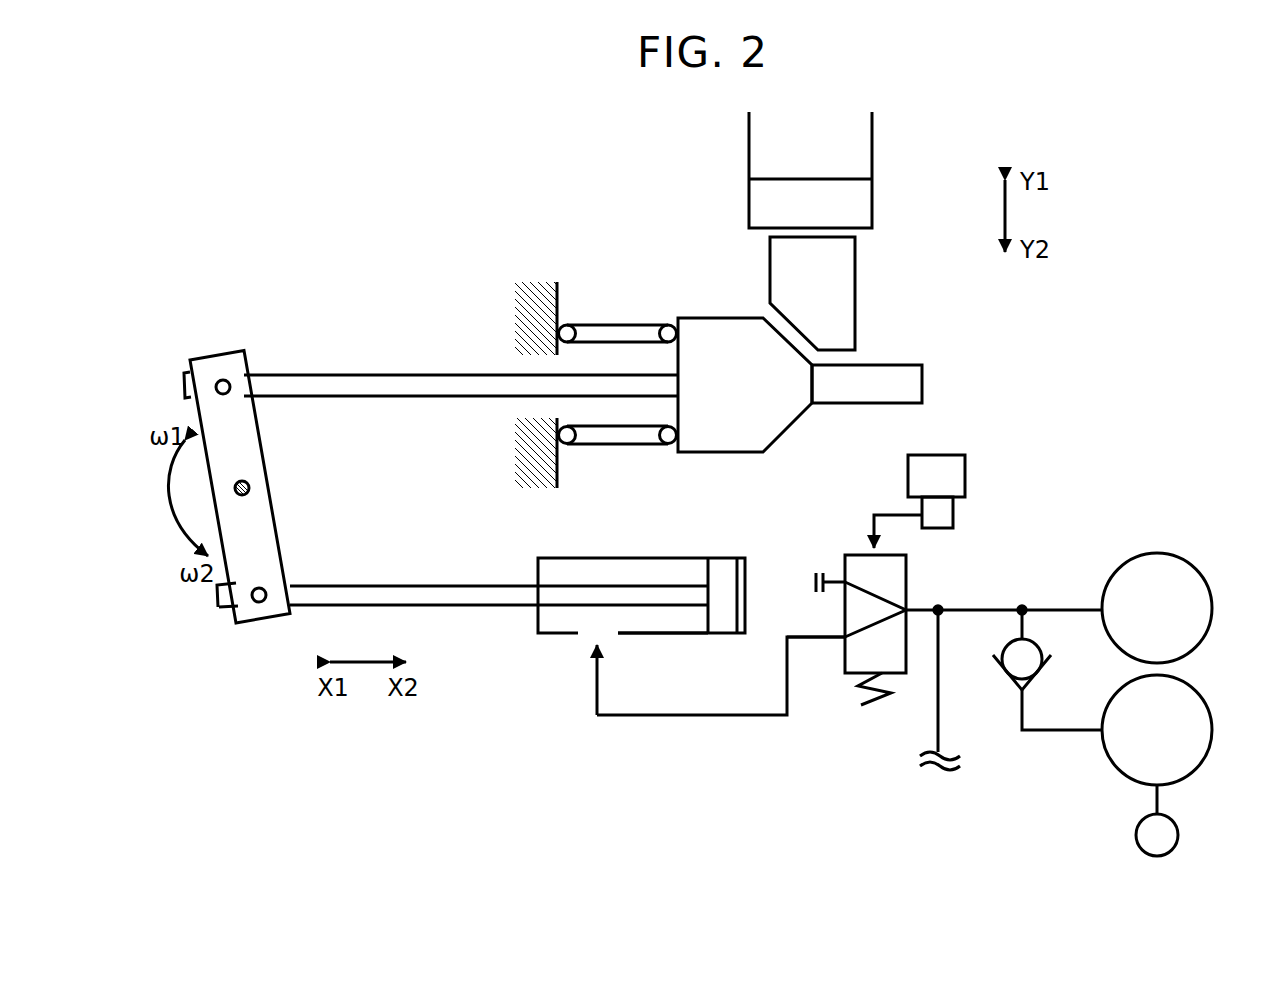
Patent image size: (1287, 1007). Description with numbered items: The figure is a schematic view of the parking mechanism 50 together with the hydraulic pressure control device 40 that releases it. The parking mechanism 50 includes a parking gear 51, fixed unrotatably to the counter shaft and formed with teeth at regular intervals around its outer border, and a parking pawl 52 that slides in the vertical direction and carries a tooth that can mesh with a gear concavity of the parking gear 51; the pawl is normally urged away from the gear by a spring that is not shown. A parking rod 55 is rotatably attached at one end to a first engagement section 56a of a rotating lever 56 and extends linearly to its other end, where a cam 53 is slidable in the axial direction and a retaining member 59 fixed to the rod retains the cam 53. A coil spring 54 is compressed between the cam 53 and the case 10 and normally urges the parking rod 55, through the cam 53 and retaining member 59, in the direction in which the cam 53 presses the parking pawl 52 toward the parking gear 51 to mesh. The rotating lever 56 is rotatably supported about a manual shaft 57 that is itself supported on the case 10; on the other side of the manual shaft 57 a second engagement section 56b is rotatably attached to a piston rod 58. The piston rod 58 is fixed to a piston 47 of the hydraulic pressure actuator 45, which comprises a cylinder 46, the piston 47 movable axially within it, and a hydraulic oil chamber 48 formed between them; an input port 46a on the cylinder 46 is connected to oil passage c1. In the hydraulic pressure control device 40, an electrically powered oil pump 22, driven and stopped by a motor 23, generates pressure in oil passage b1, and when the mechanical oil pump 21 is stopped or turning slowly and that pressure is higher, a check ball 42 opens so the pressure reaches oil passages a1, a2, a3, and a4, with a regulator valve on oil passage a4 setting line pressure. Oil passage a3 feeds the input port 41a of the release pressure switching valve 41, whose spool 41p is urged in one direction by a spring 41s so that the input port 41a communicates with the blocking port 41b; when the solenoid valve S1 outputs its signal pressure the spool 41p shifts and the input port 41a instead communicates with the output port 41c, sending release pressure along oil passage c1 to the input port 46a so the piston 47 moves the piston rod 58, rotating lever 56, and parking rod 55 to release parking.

The case 10 is at (560, 283).
The mechanical oil pump 21 is at (1200, 566).
The electrically powered oil pump 22 is at (1200, 688).
The motor 23 is at (1178, 826).
The hydraulic pressure control device 40 is at (1046, 451).
The release pressure switching valve 41 is at (877, 633).
The input port 41a is at (908, 603).
The blocking port 41b is at (843, 568).
The output port 41c is at (843, 633).
The spool 41p is at (856, 560).
The spring 41s is at (883, 701).
The check ball 42 is at (1046, 681).
The hydraulic pressure actuator 45 is at (651, 600).
The cylinder 46 is at (600, 557).
The input port 46a is at (617, 635).
The piston 47 is at (723, 562).
The hydraulic oil chamber 48 is at (673, 626).
The parking mechanism 50 is at (586, 194).
The parking gear 51 is at (874, 132).
The parking pawl 52 is at (857, 260).
The cam 53 is at (727, 326).
The coil spring 54 is at (620, 323).
The parking rod 55 is at (403, 397).
The rotating lever 56 is at (252, 425).
The first engagement section 56a is at (232, 379).
The second engagement section 56b is at (266, 589).
The manual shaft 57 is at (250, 486).
The piston rod 58 is at (410, 588).
The retaining member 59 is at (902, 363).
The solenoid valve S1 is at (946, 455).
The oil passage a1 is at (1063, 604).
The oil passage a2 is at (982, 604).
The oil passage a3 is at (918, 614).
The oil passage a4 is at (941, 698).
The oil passage b1 is at (1066, 733).
The oil passage c1 is at (790, 689).